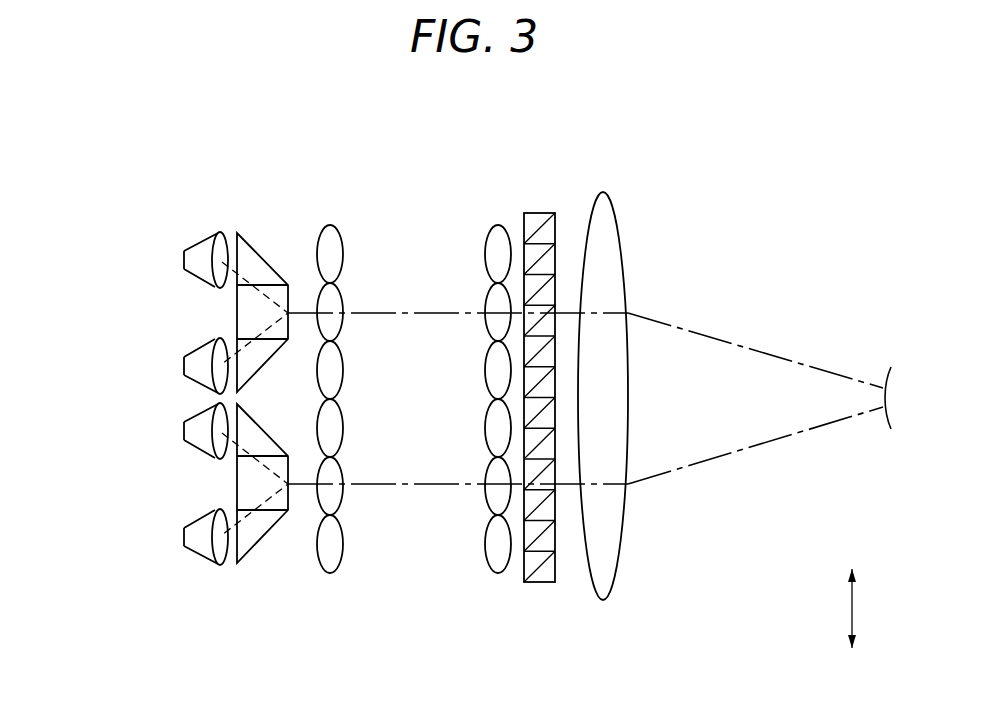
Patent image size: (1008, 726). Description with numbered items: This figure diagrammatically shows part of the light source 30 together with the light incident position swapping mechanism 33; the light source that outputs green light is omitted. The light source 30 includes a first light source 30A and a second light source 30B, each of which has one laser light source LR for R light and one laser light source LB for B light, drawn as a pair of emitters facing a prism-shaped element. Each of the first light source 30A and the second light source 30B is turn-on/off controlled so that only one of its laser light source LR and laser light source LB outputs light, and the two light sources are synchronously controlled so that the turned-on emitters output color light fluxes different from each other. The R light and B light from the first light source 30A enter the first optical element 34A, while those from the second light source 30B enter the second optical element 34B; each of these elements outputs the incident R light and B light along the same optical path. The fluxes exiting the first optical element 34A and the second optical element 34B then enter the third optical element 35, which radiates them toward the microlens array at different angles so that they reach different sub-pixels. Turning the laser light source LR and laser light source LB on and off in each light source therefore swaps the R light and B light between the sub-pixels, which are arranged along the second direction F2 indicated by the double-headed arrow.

The light source 30 is at (159, 398).
The first light source 30A is at (95, 443).
The second light source 30B is at (95, 273).
The laser light source for B light LB is at (188, 269).
The laser light source for R light LR is at (185, 355).
The light incident position swapping mechanism 33 is at (430, 205).
The first optical element 34A is at (255, 550).
The second optical element 34B is at (264, 262).
The third optical element 35 is at (617, 605).
The second direction F2 is at (868, 608).